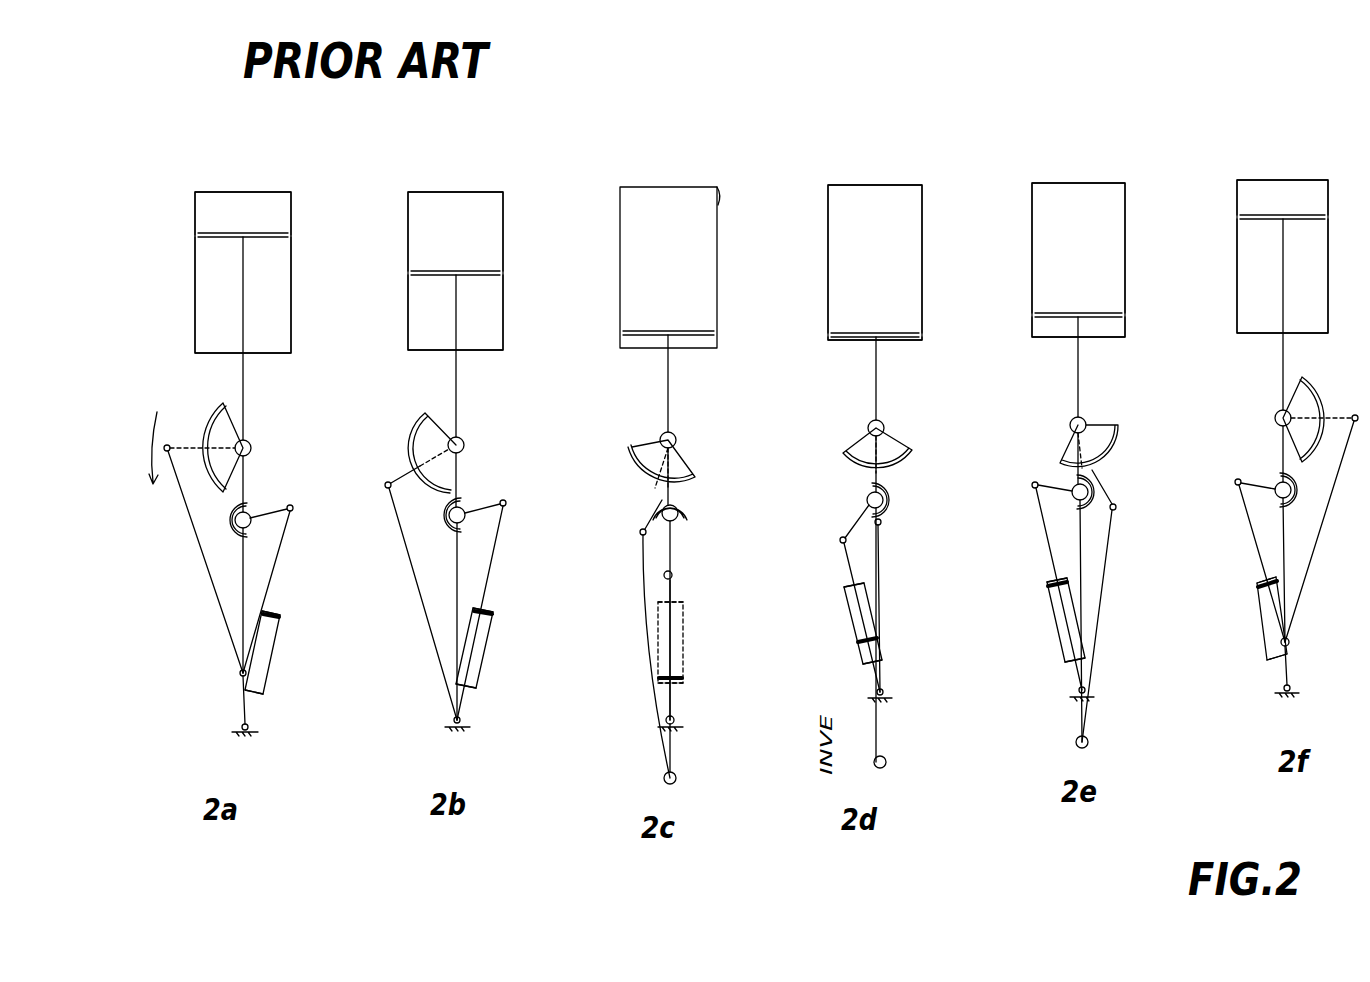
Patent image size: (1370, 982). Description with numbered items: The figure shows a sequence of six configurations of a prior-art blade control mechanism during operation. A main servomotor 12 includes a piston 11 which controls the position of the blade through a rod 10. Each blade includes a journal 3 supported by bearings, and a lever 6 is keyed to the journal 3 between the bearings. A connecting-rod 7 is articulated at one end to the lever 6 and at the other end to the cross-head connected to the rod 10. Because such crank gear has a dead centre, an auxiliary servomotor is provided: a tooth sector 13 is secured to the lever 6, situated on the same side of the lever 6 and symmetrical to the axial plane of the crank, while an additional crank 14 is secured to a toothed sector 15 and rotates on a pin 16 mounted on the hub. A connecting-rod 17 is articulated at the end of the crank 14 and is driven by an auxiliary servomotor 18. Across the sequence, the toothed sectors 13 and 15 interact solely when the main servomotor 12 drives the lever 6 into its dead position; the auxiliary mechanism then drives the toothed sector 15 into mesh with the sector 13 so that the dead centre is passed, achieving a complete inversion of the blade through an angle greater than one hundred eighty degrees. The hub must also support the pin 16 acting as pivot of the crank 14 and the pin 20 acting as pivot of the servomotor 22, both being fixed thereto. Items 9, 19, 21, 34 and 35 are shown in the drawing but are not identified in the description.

In FIG. 2a, the journal 3 is at (250, 442).
In FIG. 2b, the journal 3 is at (461, 439).
In FIG. 2c, the journal 3 is at (674, 438).
In FIG. 2d, the journal 3 is at (870, 427).
In FIG. 2e, the journal 3 is at (1072, 420).
In FIG. 2f, the journal 3 is at (1275, 418).
In FIG. 2a, the lever 6 is at (190, 452).
In FIG. 2b, the lever 6 is at (395, 478).
In FIG. 2c, the lever 6 is at (645, 510).
In FIG. 2d, the lever 6 is at (889, 529).
In FIG. 2e, the lever 6 is at (1113, 492).
In FIG. 2f, the lever 6 is at (1324, 406).
In FIG. 2a, the connecting-rod 7 is at (208, 577).
In FIG. 2b, the connecting-rod 7 is at (418, 597).
In FIG. 2c, the connecting-rod 7 is at (641, 548).
In FIG. 2d, the connecting-rod 7 is at (878, 576).
In FIG. 2e, the connecting-rod 7 is at (1102, 598).
In FIG. 2f, the connecting-rod 7 is at (1320, 530).
In FIG. 2a, the pivot pin 9 is at (239, 675).
In FIG. 2b, the pivot pin 9 is at (450, 716).
In FIG. 2c, the pivot pin 9 is at (664, 778).
In FIG. 2d, the pivot pin 9 is at (873, 762).
In FIG. 2e, the pivot pin 9 is at (1088, 741).
In FIG. 2f, the pivot pin 9 is at (1292, 642).
In FIG. 2a, the rod 10 is at (243, 308).
In FIG. 2b, the rod 10 is at (457, 378).
In FIG. 2c, the rod 10 is at (668, 389).
In FIG. 2d, the rod 10 is at (879, 383).
In FIG. 2e, the rod 10 is at (1083, 378).
In FIG. 2f, the rod 10 is at (1283, 358).
In FIG. 2a, the piston 11 is at (200, 234).
In FIG. 2b, the piston 11 is at (418, 276).
In FIG. 2c, the piston 11 is at (640, 332).
In FIG. 2d, the piston 11 is at (858, 332).
In FIG. 2e, the piston 11 is at (1052, 314).
In FIG. 2f, the piston 11 is at (1246, 215).
In FIG. 2a, the main servomotor 12 is at (195, 290).
In FIG. 2b, the main servomotor 12 is at (408, 218).
In FIG. 2c, the main servomotor 12 is at (620, 233).
In FIG. 2d, the main servomotor 12 is at (830, 238).
In FIG. 2e, the main servomotor 12 is at (1032, 232).
In FIG. 2f, the main servomotor 12 is at (1237, 303).
In FIG. 2a, the tooth sector 13 is at (210, 418).
In FIG. 2b, the tooth sector 13 is at (416, 421).
In FIG. 2c, the tooth sector 13 is at (630, 466).
In FIG. 2d, the tooth sector 13 is at (848, 464).
In FIG. 2e, the tooth sector 13 is at (1120, 432).
In FIG. 2f, the tooth sector 13 is at (1310, 386).
In FIG. 2a, the additional crank 14 is at (279, 520).
In FIG. 2b, the additional crank 14 is at (488, 512).
In FIG. 2c, the additional crank 14 is at (676, 577).
In FIG. 2d, the additional crank 14 is at (850, 533).
In FIG. 2e, the additional crank 14 is at (1048, 500).
In FIG. 2f, the additional crank 14 is at (1241, 478).
In FIG. 2a, the toothed sector 15 is at (228, 526).
In FIG. 2b, the toothed sector 15 is at (440, 518).
In FIG. 2c, the toothed sector 15 is at (689, 508).
In FIG. 2d, the toothed sector 15 is at (892, 493).
In FIG. 2e, the toothed sector 15 is at (1088, 510).
In FIG. 2f, the toothed sector 15 is at (1297, 492).
In FIG. 2a, the pin 16 is at (249, 512).
In FIG. 2b, the pin 16 is at (460, 508).
In FIG. 2c, the pin 16 is at (676, 522).
In FIG. 2d, the pin 16 is at (866, 500).
In FIG. 2e, the pin 16 is at (1070, 485).
In FIG. 2f, the pin 16 is at (1276, 486).
In FIG. 2a, the connecting-rod 17 is at (283, 566).
In FIG. 2b, the connecting-rod 17 is at (492, 563).
In FIG. 2c, the connecting-rod 17 is at (676, 600).
In FIG. 2d, the connecting-rod 17 is at (848, 563).
In FIG. 2e, the connecting-rod 17 is at (1042, 522).
In FIG. 2f, the connecting-rod 17 is at (1248, 525).
In FIG. 2a, the auxiliary servomotor 18 is at (275, 652).
In FIG. 2b, the auxiliary servomotor 18 is at (488, 640).
In FIG. 2c, the auxiliary servomotor 18 is at (658, 613).
In FIG. 2d, the auxiliary servomotor 18 is at (848, 633).
In FIG. 2e, the auxiliary servomotor 18 is at (1055, 632).
In FIG. 2f, the auxiliary servomotor 18 is at (1260, 635).
In FIG. 2a, the piston 19 is at (268, 610).
In FIG. 2b, the piston 19 is at (474, 606).
In FIG. 2c, the piston 19 is at (685, 679).
In FIG. 2d, the piston 19 is at (857, 650).
In FIG. 2e, the piston 19 is at (1046, 604).
In FIG. 2f, the piston 19 is at (1258, 590).
In FIG. 2a, the pin 20 is at (245, 731).
In FIG. 2b, the pin 20 is at (457, 731).
In FIG. 2c, the pin 20 is at (680, 727).
In FIG. 2d, the pin 20 is at (884, 692).
In FIG. 2e, the pin 20 is at (1078, 700).
In FIG. 2f, the pin 20 is at (1287, 695).
In FIG. 2a, the cylinder chamber 21 is at (280, 611).
In FIG. 2b, the cylinder chamber 21 is at (493, 609).
In FIG. 2c, the cylinder chamber 21 is at (686, 646).
In FIG. 2d, the cylinder chamber 21 is at (848, 600).
In FIG. 2e, the cylinder chamber 21 is at (1050, 580).
In FIG. 2f, the cylinder chamber 21 is at (1253, 580).
In FIG. 2a, the servomotor 22 is at (265, 672).
In FIG. 2b, the servomotor 22 is at (470, 676).
In FIG. 2c, the servomotor 22 is at (683, 682).
In FIG. 2d, the servomotor 22 is at (862, 665).
In FIG. 2e, the servomotor 22 is at (1062, 645).
In FIG. 2f, the servomotor 22 is at (1270, 655).
In FIG. 2a, the upper chamber 34 is at (278, 214).
In FIG. 2b, the upper chamber 34 is at (498, 243).
In FIG. 2d, the upper chamber 34 is at (910, 236).
In FIG. 2e, the upper chamber 34 is at (1113, 232).
In FIG. 2f, the upper chamber 34 is at (1320, 208).
In FIG. 2a, the lower chamber 35 is at (279, 322).
In FIG. 2b, the lower chamber 35 is at (494, 303).
In FIG. 2d, the lower chamber 35 is at (900, 341).
In FIG. 2e, the lower chamber 35 is at (1118, 328).
In FIG. 2f, the lower chamber 35 is at (1318, 313).